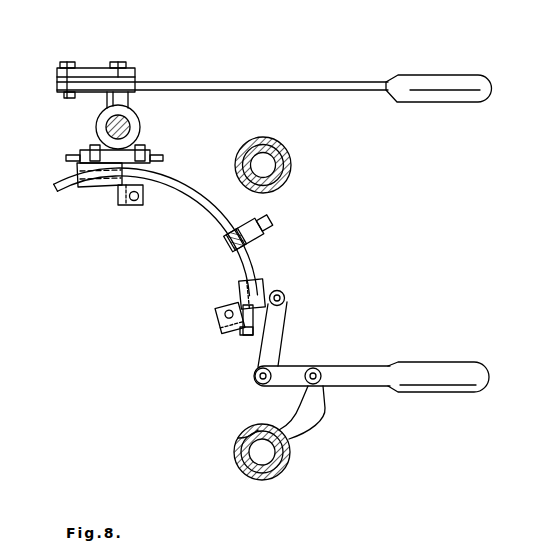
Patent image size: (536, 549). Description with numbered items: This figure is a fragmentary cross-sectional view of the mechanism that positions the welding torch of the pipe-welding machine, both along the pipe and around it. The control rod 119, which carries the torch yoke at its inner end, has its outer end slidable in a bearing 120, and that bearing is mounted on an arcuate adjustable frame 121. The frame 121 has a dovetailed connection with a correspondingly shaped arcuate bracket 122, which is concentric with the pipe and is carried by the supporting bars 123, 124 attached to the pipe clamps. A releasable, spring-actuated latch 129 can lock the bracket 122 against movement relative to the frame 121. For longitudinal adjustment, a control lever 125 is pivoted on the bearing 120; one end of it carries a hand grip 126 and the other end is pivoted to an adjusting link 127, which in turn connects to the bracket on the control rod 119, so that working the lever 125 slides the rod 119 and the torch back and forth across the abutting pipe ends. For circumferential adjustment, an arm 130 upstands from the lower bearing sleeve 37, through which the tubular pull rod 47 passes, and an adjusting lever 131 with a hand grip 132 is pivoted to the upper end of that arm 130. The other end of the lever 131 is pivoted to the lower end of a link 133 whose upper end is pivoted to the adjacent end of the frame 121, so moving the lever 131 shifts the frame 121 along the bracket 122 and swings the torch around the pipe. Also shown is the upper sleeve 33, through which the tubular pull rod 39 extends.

The upper sleeve 33 is at (292, 148).
The lower bearing sleeve 37 is at (288, 463).
The tubular pull rod 39 is at (262, 160).
The tubular pull rod 47 is at (246, 433).
The rod 119 is at (106, 128).
The bearing 120 is at (142, 118).
The adjustable frame 121 is at (195, 176).
The bracket 122 is at (203, 208).
The supporting bar 123 is at (118, 190).
The supporting bar 124 is at (243, 332).
The control lever 125 is at (291, 82).
The hand grip 126 is at (452, 75).
The adjusting link 127 is at (87, 68).
The latch 129 is at (266, 236).
The arm 130 is at (317, 418).
The adjusting lever 131 is at (384, 368).
The hand grip 132 is at (478, 366).
The link 133 is at (283, 341).